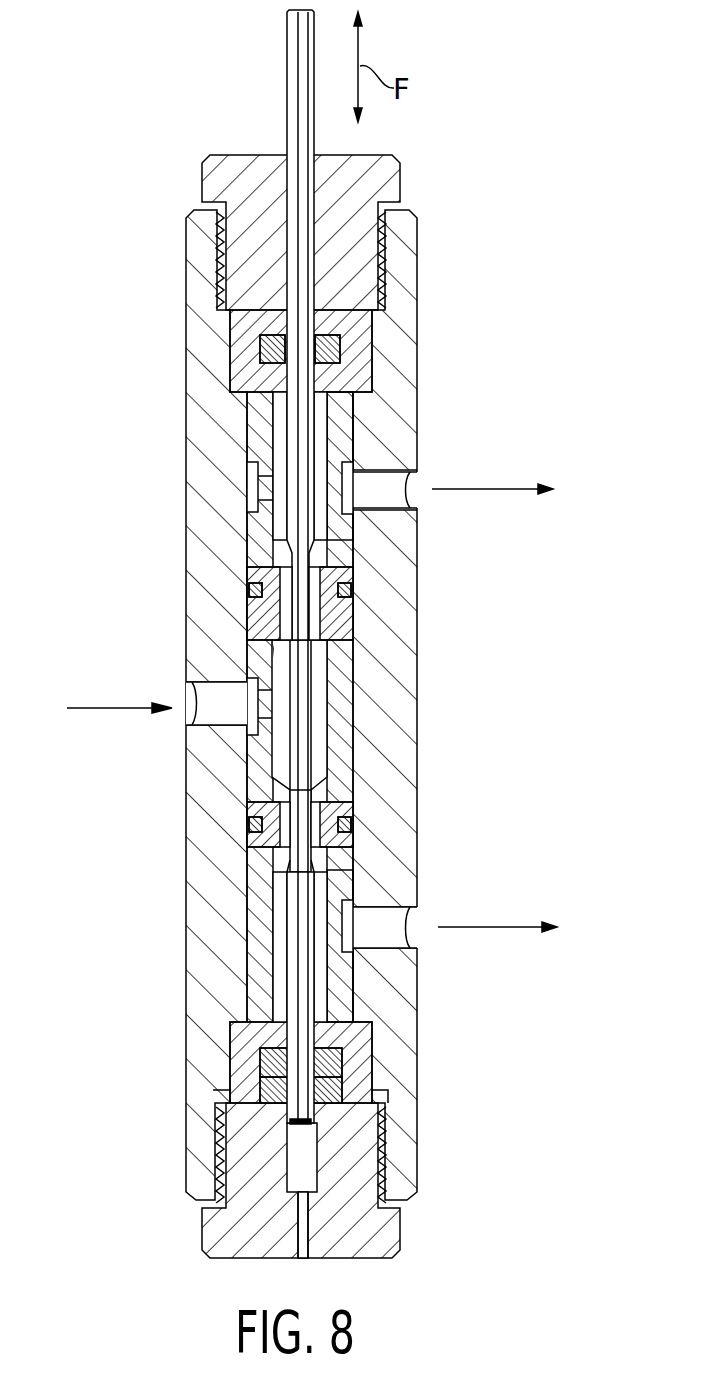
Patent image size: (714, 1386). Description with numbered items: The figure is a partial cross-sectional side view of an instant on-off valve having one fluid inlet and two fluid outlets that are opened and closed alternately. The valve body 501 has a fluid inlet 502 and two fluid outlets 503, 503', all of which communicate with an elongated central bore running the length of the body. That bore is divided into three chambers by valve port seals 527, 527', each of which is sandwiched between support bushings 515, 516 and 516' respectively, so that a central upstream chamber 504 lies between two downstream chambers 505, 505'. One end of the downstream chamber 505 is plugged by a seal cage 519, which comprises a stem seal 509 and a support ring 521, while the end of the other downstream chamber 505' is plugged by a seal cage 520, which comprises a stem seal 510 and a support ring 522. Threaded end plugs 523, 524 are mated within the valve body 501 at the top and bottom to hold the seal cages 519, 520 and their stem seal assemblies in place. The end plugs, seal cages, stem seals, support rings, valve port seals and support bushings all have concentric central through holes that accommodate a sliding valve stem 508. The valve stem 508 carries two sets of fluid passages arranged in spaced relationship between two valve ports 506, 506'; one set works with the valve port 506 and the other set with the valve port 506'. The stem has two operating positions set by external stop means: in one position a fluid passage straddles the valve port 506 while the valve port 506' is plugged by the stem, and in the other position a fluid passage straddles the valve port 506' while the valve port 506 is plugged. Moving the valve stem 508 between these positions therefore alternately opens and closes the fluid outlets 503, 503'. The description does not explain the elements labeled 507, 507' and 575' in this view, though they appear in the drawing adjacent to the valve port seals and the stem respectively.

The valve body 501 is at (405, 252).
The fluid inlet 502 is at (95, 708).
The fluid outlet 503 is at (478, 476).
The fluid outlet 503' is at (487, 911).
The upstream chamber 504 is at (320, 755).
The downstream chamber 505 is at (388, 466).
The downstream chamber 505' is at (384, 941).
The valve port 506 is at (190, 509).
The valve port 506' is at (188, 791).
The piston 507 is at (371, 593).
The second piston 507' is at (379, 817).
The valve stem 508 is at (297, 85).
The stem seal 509 is at (262, 353).
The stem seal 510 is at (267, 1060).
The support bushing 515 is at (262, 618).
The support bushing 516 is at (424, 456).
The support bushing 516' is at (419, 956).
The seal cage 519 is at (357, 352).
The seal cage 520 is at (242, 1035).
The support ring 521 is at (267, 322).
The support ring 522 is at (242, 1080).
The end plug 523 is at (215, 190).
The end plug 524 is at (230, 1228).
The valve port seal 527 is at (379, 597).
The valve port seal 527' is at (387, 837).
The spacer 575' is at (217, 721).